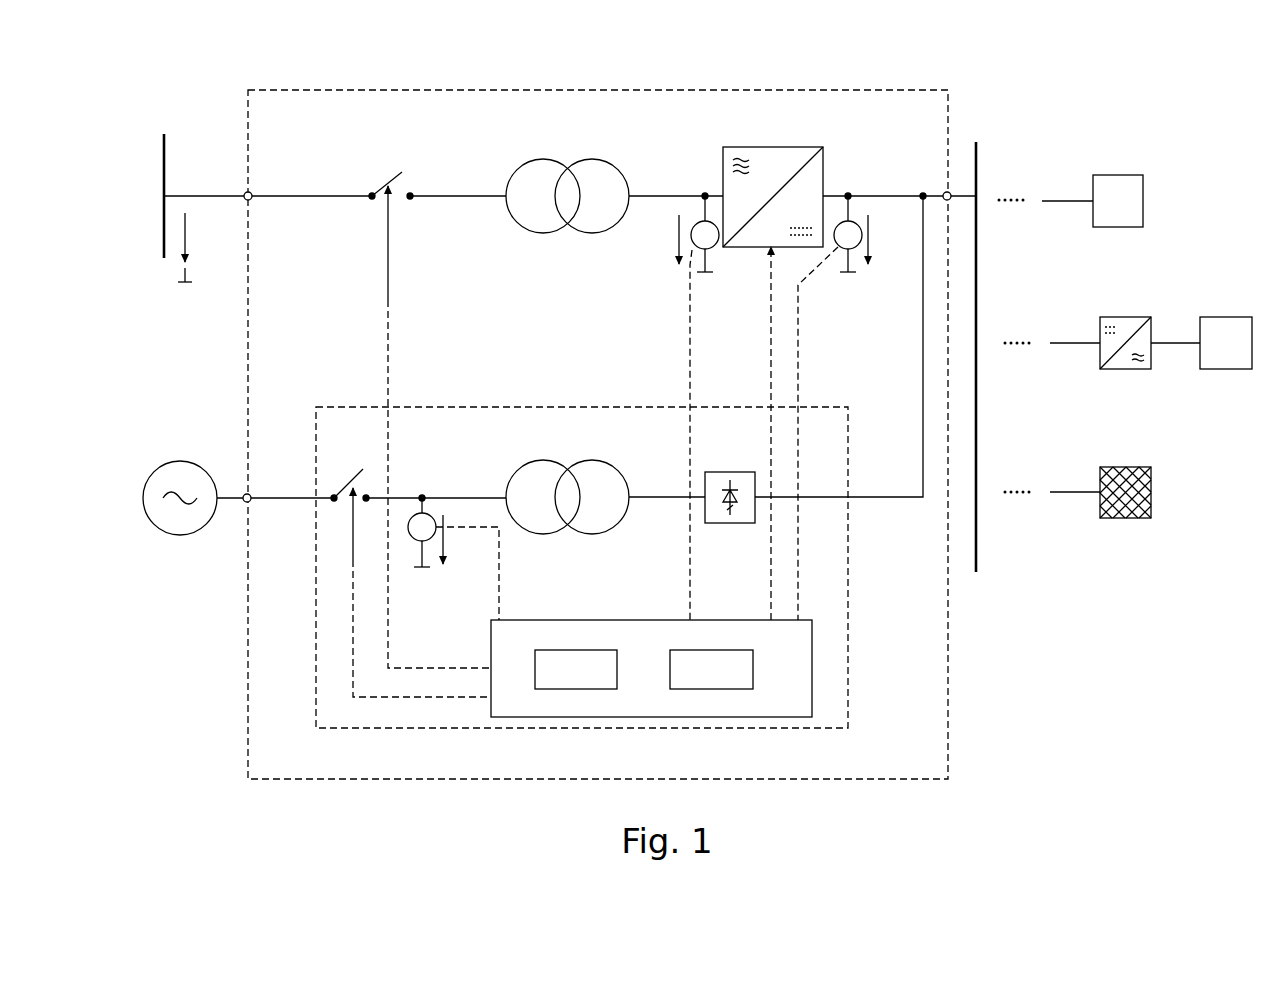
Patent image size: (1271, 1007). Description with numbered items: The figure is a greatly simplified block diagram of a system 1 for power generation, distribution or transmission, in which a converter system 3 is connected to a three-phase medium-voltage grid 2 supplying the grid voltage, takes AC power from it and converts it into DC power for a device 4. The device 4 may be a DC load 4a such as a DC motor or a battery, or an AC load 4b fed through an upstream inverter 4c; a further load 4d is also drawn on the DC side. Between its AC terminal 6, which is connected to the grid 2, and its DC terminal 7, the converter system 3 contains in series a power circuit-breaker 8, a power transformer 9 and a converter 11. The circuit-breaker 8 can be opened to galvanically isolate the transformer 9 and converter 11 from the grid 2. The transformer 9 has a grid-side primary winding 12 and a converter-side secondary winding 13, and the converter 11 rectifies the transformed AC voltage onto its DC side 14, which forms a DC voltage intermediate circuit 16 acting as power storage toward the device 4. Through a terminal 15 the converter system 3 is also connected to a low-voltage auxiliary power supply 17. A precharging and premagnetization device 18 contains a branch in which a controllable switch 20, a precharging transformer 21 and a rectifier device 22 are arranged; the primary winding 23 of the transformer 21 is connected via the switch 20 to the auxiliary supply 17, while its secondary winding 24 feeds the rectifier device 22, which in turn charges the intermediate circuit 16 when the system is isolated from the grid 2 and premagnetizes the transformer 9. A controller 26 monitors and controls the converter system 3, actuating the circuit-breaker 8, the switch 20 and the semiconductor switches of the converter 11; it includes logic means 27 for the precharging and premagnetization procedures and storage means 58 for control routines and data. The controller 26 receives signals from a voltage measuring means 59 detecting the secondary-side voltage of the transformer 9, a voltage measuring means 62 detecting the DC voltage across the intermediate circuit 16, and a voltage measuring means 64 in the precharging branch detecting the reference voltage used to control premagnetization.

The system 1 is at (200, 86).
The grid 2 is at (162, 173).
The converter system 3 is at (438, 88).
The device 4 is at (1130, 103).
The DC load 4a is at (1118, 173).
The AC load 4b is at (1226, 315).
The inverter 4c is at (1125, 315).
The load 4d is at (1125, 465).
The AC terminal 6 is at (245, 191).
The DC terminal 7 is at (951, 190).
The power circuit-breaker 8 is at (383, 182).
The power transformer 9 is at (569, 146).
The converter 11 is at (770, 145).
The primary winding 12 is at (480, 193).
The secondary winding 13 is at (643, 192).
The DC side 14 is at (838, 192).
The terminal 15 is at (250, 493).
The DC voltage intermediate circuit 16 is at (905, 155).
The auxiliary power supply 17 is at (180, 460).
The precharging and premagnetization device 18 is at (335, 737).
The switch 20 is at (350, 480).
The precharging transformer 21 is at (568, 448).
The rectifier device 22 is at (730, 470).
The primary winding 23 is at (473, 493).
The secondary winding 24 is at (660, 493).
The controller 26 is at (650, 620).
The logic means 27 is at (575, 650).
The storage means 58 is at (712, 650).
The voltage measuring means 59 is at (692, 222).
The voltage measuring means 62 is at (845, 250).
The voltage measuring means 64 is at (410, 516).